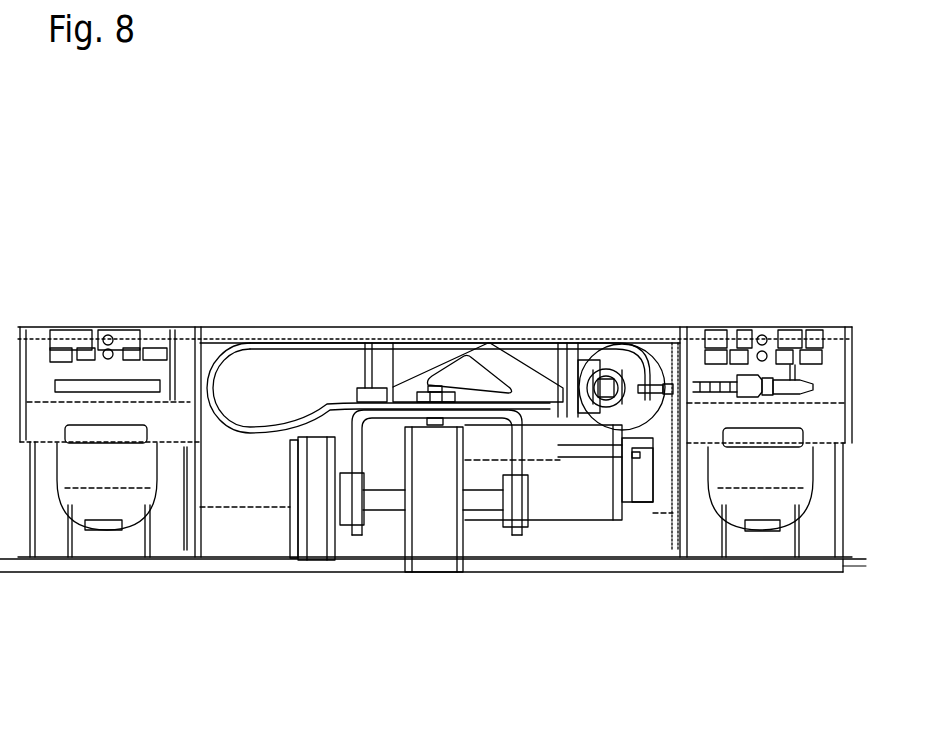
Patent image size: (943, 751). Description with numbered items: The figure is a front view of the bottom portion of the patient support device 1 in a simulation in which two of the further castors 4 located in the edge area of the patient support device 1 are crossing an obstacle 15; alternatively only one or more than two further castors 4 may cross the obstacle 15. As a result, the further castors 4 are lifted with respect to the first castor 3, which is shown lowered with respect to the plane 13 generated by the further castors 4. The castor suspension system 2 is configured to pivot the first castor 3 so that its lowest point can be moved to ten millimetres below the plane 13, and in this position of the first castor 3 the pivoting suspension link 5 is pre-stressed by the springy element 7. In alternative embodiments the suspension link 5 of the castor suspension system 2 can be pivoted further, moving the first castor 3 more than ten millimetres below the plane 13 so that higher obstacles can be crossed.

The patient support device 1 is at (510, 205).
The castor suspension system 2 is at (590, 323).
The first castor 3 is at (447, 553).
The further castors 4 is at (123, 507).
The pivoting suspension link 5 is at (387, 410).
The springy element 7 is at (214, 341).
The plane 13 is at (860, 560).
The obstacle 15 is at (107, 563).